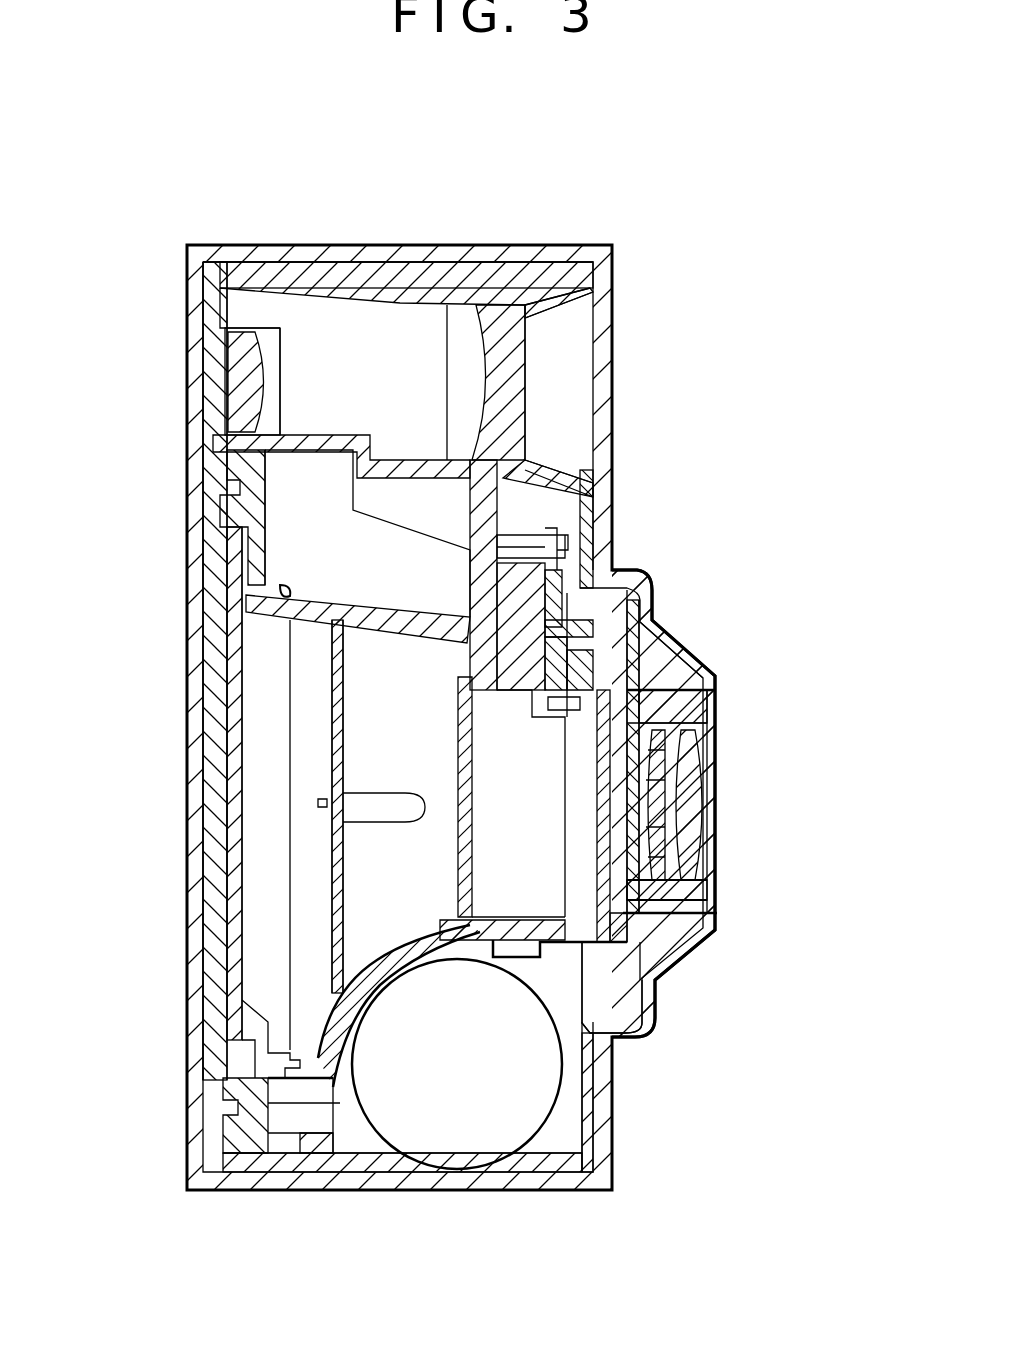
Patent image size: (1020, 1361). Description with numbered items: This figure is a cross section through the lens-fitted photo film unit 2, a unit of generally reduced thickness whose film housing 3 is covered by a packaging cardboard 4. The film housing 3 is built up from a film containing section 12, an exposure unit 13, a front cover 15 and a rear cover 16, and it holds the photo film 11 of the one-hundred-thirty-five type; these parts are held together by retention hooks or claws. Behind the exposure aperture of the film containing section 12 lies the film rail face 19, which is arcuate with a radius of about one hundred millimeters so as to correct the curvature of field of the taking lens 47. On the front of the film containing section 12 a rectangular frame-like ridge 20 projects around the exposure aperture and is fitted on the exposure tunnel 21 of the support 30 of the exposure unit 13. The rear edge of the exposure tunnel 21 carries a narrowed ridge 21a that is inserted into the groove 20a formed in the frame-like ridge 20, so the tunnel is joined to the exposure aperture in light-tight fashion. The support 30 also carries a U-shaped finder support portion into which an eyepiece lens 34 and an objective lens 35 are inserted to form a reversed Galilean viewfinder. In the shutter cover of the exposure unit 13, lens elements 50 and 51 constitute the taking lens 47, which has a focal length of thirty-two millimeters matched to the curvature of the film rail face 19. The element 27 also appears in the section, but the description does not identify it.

The lens-fitted photo film unit 2 is at (497, 232).
The film housing 3 is at (655, 539).
The packaging cardboard 4 is at (313, 246).
The photo film 11 is at (235, 828).
The film containing section 12 is at (290, 1107).
The exposure unit 13 is at (670, 917).
The front cover 15 is at (714, 611).
The rear cover 16 is at (160, 628).
The film rail face 19 is at (248, 590).
The frame-like ridge 20 is at (285, 595).
The groove 20a is at (280, 606).
The exposure tunnel 21 is at (333, 1063).
The narrowed ridge 21a is at (268, 1060).
The roller 27 is at (497, 1135).
The support 30 is at (538, 970).
The eyepiece lens 34 is at (235, 384).
The objective lens 35 is at (513, 381).
The taking lens 47 is at (815, 725).
The lens element 50 is at (716, 765).
The lens element 51 is at (716, 838).